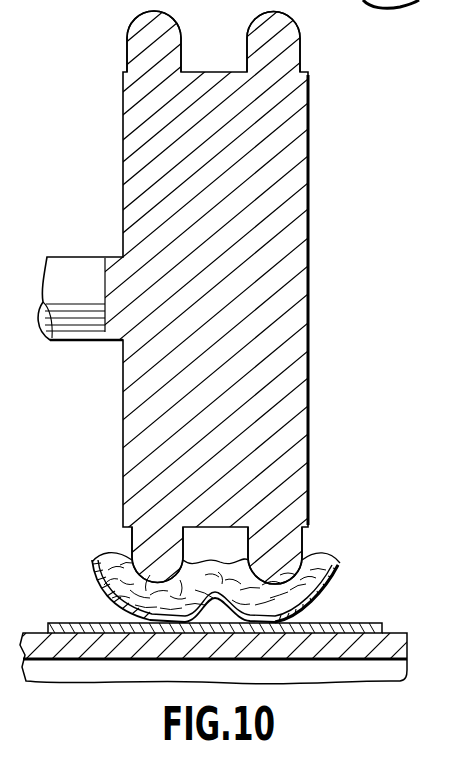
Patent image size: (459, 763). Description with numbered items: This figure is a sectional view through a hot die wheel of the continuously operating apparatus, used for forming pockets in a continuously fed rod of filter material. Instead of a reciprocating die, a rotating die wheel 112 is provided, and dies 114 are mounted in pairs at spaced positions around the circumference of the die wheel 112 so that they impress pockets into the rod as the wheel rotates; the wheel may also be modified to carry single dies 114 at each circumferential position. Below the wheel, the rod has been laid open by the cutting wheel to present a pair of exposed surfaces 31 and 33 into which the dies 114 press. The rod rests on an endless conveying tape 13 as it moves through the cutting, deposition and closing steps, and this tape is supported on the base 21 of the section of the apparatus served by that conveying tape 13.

The rotating die wheel 112 is at (309, 200).
The dies 114 is at (247, 33).
The exposed surface 31 is at (128, 553).
The exposed surface 33 is at (304, 554).
The endless conveying tape 13 is at (366, 622).
The base 21 is at (373, 650).